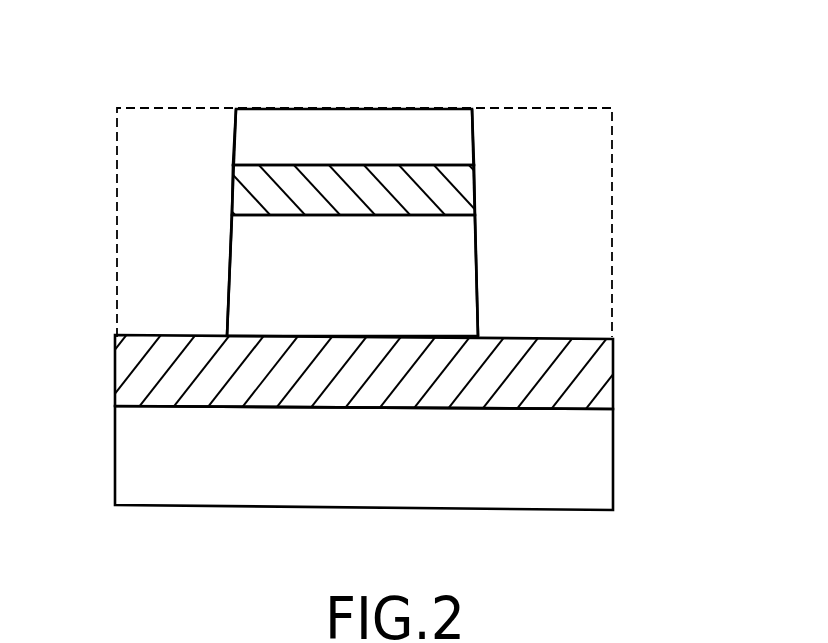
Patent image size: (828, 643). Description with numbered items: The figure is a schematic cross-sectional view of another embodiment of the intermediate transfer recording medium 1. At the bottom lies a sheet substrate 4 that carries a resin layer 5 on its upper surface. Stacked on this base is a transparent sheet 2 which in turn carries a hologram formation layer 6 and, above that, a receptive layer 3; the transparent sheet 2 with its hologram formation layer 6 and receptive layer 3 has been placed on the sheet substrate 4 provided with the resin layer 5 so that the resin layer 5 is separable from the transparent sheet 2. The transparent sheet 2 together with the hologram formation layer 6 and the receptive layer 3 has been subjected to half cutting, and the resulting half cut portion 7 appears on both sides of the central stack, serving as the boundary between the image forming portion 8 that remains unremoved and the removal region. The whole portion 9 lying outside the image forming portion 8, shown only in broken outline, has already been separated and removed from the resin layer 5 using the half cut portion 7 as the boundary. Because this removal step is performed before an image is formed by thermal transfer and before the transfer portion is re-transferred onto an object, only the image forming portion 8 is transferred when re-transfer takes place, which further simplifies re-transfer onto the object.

The intermediate transfer recording medium 1 is at (618, 263).
The transparent sheet 2 is at (455, 276).
The receptive layer 3 is at (467, 157).
The sheet substrate 4 is at (597, 463).
The resin layer 5 is at (597, 381).
The hologram formation layer 6 is at (467, 194).
The half cut portion 7 is at (237, 130).
The image forming portion 8 is at (470, 107).
The removal portion 9 is at (132, 195).